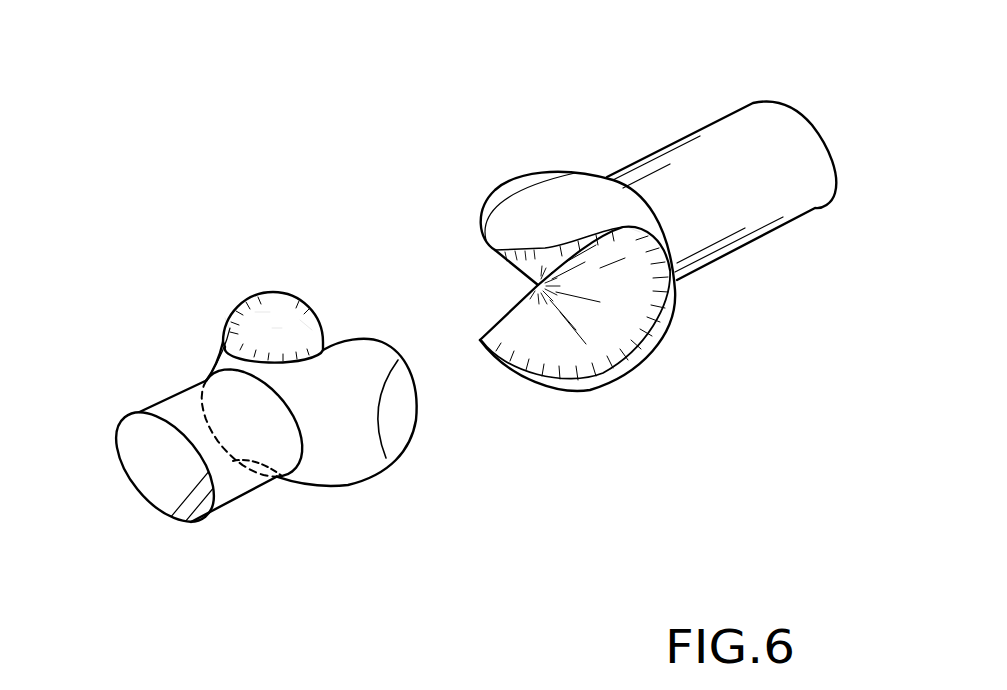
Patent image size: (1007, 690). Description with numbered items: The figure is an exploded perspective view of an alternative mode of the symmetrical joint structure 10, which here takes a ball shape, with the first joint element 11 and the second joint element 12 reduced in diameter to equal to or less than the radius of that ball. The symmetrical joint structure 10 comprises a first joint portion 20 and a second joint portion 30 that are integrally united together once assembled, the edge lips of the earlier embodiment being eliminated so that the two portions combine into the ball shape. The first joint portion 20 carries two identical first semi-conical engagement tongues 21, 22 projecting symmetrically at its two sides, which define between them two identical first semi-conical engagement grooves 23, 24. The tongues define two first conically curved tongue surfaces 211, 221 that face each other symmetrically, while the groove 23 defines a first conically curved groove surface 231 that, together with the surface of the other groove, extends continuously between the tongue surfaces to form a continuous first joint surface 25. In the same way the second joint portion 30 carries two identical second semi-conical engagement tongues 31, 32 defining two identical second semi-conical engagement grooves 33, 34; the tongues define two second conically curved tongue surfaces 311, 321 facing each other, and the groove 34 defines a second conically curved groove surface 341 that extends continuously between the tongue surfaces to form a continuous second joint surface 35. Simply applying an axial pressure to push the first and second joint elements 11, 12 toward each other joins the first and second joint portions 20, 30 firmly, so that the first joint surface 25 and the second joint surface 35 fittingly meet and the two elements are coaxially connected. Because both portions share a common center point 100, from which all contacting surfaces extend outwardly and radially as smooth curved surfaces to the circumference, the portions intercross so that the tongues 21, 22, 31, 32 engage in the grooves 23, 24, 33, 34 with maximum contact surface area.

The symmetrical joint structure 10 is at (417, 72).
The first joint portion 20 is at (265, 233).
The second joint portion 30 is at (482, 158).
The first joint element 11 is at (177, 403).
The second joint element 12 is at (801, 199).
The first semi-conical engagement tongue 21 is at (386, 458).
The first conically curved tongue surface 211 is at (420, 392).
The first semi-conical engagement tongue 22 is at (306, 296).
The first conically curved tongue surface 221 is at (308, 327).
The first semi-conical engagement groove 23 is at (262, 310).
The first conically curved groove surface 231 is at (230, 319).
The first semi-conical engagement groove 24 is at (282, 485).
The first joint surface 25 is at (277, 327).
The second semi-conical engagement tongue 31 is at (568, 338).
The second conically curved tongue surface 311 is at (513, 323).
The second semi-conical engagement tongue 32 is at (541, 247).
The second conically curved tongue surface 321 is at (519, 258).
The second semi-conical engagement groove 33 is at (511, 270).
The second semi-conical engagement groove 34 is at (616, 295).
The second conically curved groove surface 341 is at (653, 285).
The second joint surface 35 is at (637, 243).
The center point 100 is at (532, 285).